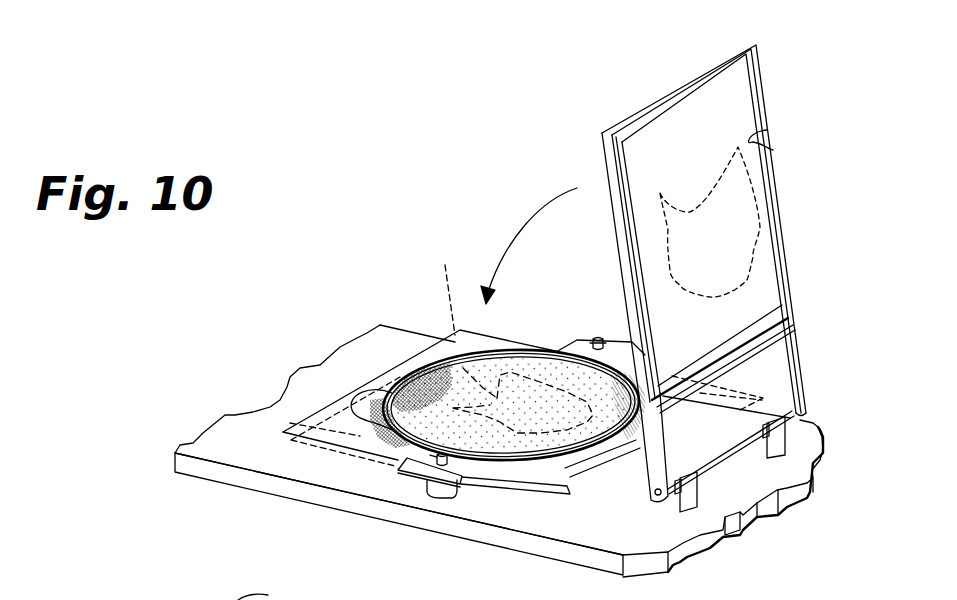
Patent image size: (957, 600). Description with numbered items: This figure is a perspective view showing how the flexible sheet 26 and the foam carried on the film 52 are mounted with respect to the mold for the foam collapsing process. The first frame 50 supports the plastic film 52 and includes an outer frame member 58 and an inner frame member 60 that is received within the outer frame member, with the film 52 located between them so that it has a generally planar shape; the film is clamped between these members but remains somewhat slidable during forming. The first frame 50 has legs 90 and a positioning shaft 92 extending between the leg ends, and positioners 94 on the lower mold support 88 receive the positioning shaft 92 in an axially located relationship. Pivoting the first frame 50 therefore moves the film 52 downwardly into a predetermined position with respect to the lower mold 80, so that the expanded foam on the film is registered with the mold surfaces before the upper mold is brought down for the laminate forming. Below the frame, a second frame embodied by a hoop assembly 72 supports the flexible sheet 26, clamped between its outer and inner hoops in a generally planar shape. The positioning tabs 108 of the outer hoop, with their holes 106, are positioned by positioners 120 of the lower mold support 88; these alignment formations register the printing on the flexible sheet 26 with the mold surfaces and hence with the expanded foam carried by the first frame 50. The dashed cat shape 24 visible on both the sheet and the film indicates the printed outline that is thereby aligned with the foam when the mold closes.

The tray 24 is at (523, 366).
The flexible sheet 26 is at (437, 372).
The first frame 50 is at (754, 230).
The plastic film 52 is at (733, 117).
The outer frame member 58 is at (780, 190).
The inner frame member 60 is at (773, 150).
The hoop assembly 72 is at (750, 257).
The lower mold 80 is at (542, 483).
The lower mold support 88 is at (398, 488).
The legs 90 is at (800, 365).
The positioning shaft 92 is at (737, 452).
The positioners 94 is at (785, 445).
The holes 106 is at (600, 341).
The positioning tabs 108 is at (577, 340).
The positioners 120 is at (595, 338).